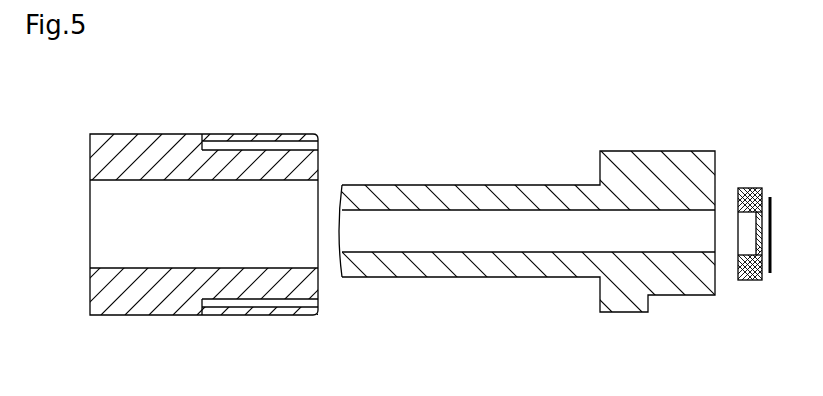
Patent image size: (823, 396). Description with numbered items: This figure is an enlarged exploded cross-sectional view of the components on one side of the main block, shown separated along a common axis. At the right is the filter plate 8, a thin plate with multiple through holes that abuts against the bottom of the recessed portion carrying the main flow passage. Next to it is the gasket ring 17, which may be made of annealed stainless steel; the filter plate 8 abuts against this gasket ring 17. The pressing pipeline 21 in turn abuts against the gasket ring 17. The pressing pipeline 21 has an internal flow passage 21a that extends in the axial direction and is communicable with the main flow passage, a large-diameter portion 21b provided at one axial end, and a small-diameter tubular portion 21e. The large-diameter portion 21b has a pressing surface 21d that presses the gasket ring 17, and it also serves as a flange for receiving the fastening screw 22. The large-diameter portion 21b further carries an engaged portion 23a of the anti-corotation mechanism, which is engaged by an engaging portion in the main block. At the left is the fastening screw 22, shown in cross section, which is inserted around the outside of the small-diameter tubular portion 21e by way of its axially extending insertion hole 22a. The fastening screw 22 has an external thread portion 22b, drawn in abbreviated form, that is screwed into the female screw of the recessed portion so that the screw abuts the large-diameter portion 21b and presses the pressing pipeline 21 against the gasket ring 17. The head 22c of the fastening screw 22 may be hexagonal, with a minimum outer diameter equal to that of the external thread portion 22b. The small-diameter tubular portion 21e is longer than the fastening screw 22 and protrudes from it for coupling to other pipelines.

The filter plate 8 is at (771, 190).
The gasket ring 17 is at (748, 280).
The pressing pipeline 21 is at (534, 172).
The internal flow passage 21a is at (494, 254).
The large-diameter portion 21b is at (598, 292).
The pressing surface 21d is at (713, 183).
The small-diameter tubular portion 21e is at (425, 185).
The fastening screw 22 is at (156, 128).
The insertion hole 22a is at (163, 270).
The external thread portion 22b is at (253, 306).
The head 22c is at (160, 316).
The engaged portion 23a is at (675, 297).